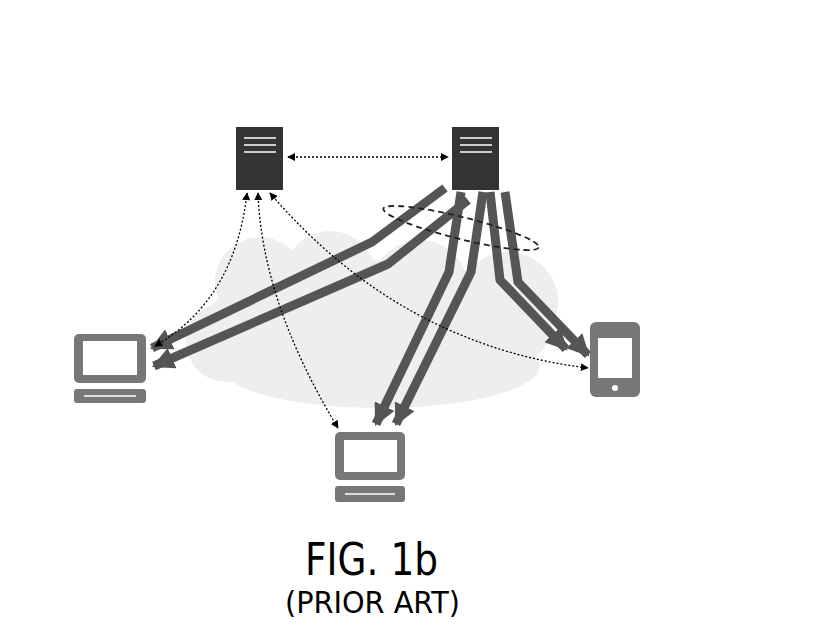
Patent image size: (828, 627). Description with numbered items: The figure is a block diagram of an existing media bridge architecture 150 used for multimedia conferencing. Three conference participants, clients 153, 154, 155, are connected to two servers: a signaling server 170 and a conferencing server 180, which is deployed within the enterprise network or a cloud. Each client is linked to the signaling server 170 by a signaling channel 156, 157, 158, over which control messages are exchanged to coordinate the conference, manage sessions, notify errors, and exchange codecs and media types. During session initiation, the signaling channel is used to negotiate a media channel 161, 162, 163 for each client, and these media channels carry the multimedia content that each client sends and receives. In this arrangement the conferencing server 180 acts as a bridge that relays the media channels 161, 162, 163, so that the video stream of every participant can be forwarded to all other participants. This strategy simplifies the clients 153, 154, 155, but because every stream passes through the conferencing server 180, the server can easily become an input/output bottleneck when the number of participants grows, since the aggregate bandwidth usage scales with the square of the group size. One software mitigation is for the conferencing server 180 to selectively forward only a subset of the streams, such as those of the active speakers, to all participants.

The media bridge architecture 150 is at (116, 78).
The client 153 is at (96, 334).
The client 154 is at (348, 480).
The client 155 is at (636, 357).
The signaling channel 156 is at (196, 312).
The signaling channel 157 is at (303, 355).
The signaling channel 158 is at (520, 356).
The media channel 161 is at (303, 291).
The media channel 162 is at (415, 341).
The media channel 163 is at (543, 306).
The signaling server 170 is at (235, 161).
The conferencing server 180 is at (500, 146).